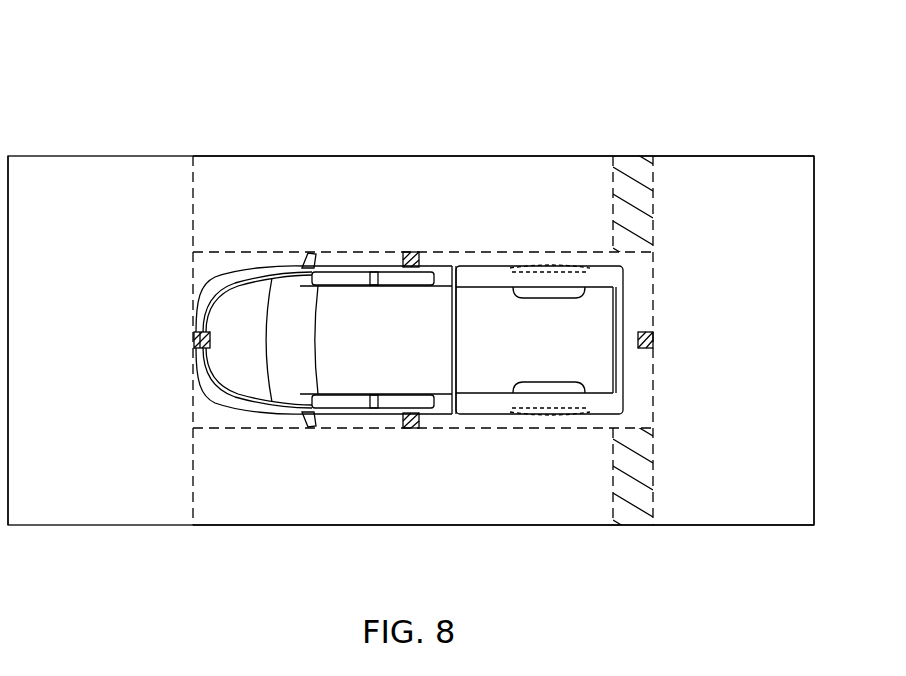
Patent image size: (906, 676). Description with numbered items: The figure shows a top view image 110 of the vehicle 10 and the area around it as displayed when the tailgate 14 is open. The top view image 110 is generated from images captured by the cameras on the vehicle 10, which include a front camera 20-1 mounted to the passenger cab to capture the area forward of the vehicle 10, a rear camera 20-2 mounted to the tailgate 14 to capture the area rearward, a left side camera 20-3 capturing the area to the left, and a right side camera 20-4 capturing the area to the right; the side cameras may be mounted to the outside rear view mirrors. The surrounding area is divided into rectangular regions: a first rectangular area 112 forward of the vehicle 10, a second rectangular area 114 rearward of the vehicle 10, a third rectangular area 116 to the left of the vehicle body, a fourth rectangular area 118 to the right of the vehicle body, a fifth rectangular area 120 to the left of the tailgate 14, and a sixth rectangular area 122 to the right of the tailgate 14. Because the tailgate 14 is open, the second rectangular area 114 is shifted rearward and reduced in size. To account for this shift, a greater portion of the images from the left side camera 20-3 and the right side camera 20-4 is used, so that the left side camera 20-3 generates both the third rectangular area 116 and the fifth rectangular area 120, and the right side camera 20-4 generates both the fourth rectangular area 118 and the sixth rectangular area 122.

The top view image 110 is at (100, 95).
The vehicle 10 is at (262, 255).
The tailgate 14 is at (642, 302).
The front camera 20-1 is at (195, 342).
The rear camera 20-2 is at (655, 342).
The left side camera 20-3 is at (413, 430).
The right side camera 20-4 is at (411, 250).
The first rectangular area 112 is at (60, 512).
The second rectangular area 114 is at (715, 512).
The third rectangular area 116 is at (245, 512).
The fourth rectangular area 118 is at (527, 178).
The fifth rectangular area 120 is at (635, 497).
The sixth rectangular area 122 is at (632, 170).